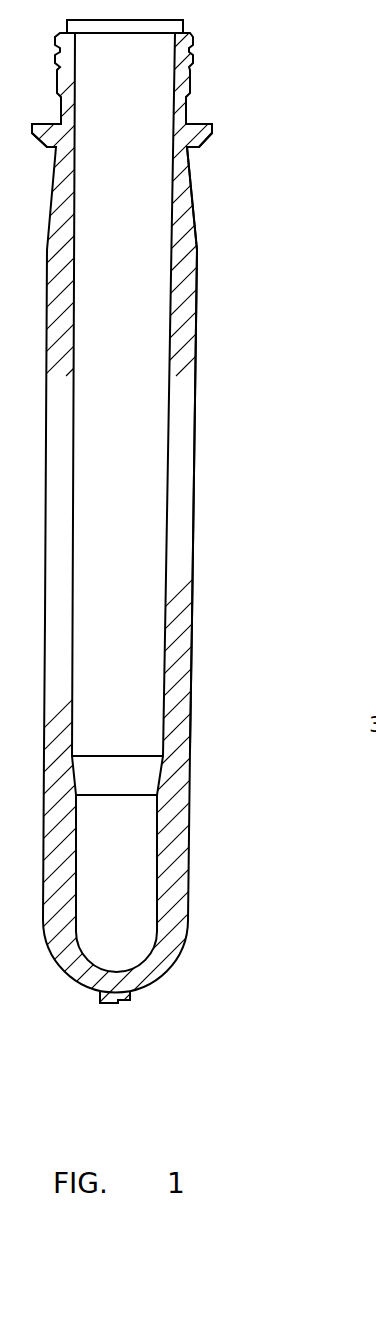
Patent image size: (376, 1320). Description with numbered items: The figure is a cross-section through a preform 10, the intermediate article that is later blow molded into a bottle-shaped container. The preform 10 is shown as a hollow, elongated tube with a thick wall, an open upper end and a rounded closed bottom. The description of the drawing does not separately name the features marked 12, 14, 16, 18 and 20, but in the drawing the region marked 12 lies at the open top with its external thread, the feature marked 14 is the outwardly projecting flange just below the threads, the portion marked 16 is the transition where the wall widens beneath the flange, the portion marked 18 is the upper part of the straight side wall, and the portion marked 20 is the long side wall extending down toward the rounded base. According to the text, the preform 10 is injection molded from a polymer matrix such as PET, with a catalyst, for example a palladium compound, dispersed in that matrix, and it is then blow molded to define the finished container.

The preform 10 is at (206, 372).
The open top end / rim 12 is at (187, 48).
The flange 14 is at (201, 126).
The shoulder / transition portion 16 is at (190, 178).
The side wall upper portion 18 is at (193, 218).
The side wall 20 is at (193, 600).